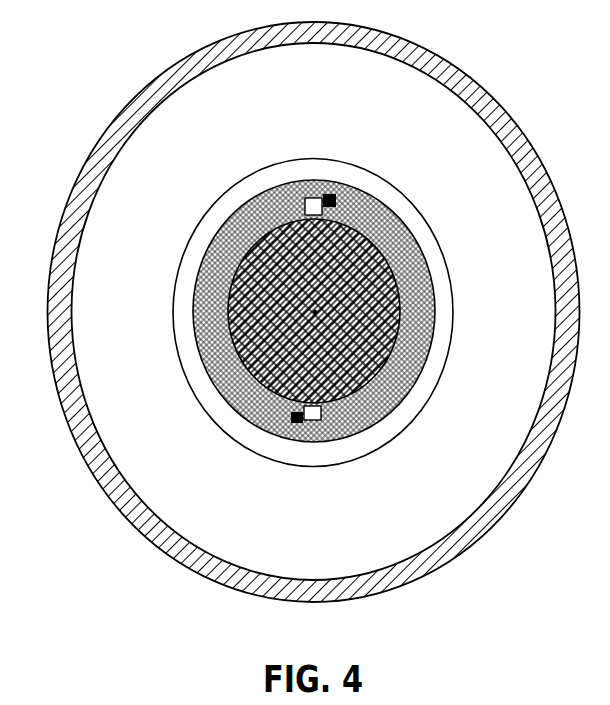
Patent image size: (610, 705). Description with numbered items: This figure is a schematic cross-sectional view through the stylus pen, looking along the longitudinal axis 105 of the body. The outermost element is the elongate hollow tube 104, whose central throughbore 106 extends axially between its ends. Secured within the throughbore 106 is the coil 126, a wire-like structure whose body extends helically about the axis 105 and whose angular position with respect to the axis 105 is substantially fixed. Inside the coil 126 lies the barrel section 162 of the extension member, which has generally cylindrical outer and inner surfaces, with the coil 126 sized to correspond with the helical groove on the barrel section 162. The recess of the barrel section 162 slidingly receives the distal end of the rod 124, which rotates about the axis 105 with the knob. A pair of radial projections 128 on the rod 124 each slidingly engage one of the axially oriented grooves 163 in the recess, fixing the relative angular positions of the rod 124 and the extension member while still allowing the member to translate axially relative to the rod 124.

The tube 104 is at (450, 61).
The central throughbore 106 is at (152, 252).
The coil 126 is at (263, 168).
The barrel section 162 is at (435, 297).
The rod 124 is at (237, 363).
The longitudinal axis 105 is at (316, 314).
The radial projections 128 is at (335, 200).
The axially oriented grooves 163 is at (313, 197).